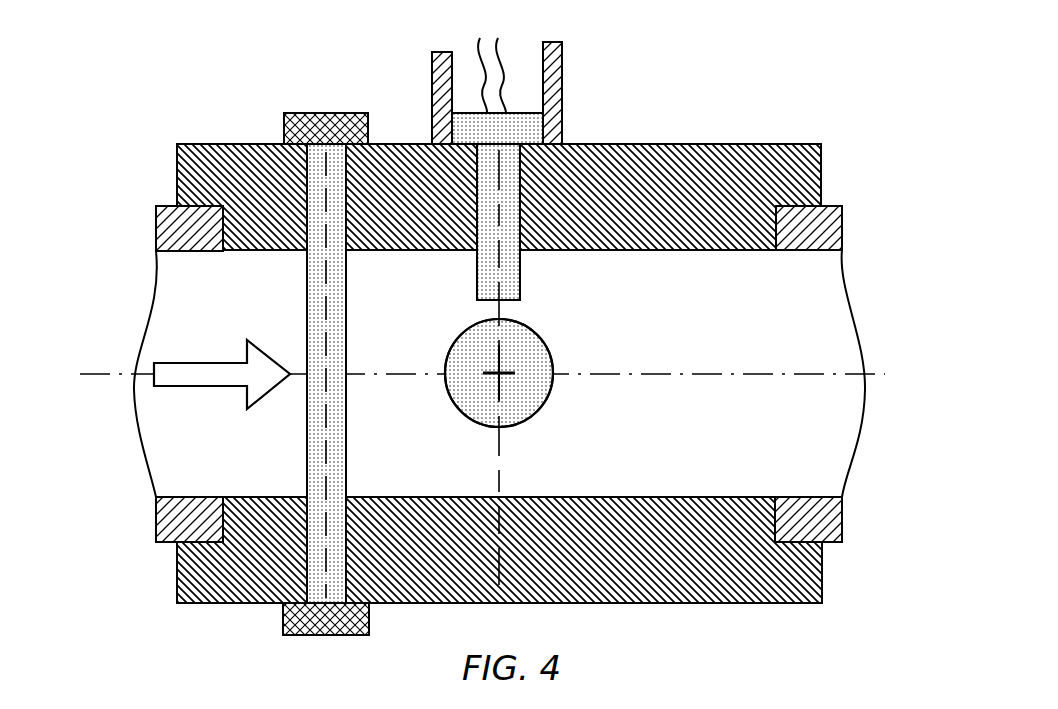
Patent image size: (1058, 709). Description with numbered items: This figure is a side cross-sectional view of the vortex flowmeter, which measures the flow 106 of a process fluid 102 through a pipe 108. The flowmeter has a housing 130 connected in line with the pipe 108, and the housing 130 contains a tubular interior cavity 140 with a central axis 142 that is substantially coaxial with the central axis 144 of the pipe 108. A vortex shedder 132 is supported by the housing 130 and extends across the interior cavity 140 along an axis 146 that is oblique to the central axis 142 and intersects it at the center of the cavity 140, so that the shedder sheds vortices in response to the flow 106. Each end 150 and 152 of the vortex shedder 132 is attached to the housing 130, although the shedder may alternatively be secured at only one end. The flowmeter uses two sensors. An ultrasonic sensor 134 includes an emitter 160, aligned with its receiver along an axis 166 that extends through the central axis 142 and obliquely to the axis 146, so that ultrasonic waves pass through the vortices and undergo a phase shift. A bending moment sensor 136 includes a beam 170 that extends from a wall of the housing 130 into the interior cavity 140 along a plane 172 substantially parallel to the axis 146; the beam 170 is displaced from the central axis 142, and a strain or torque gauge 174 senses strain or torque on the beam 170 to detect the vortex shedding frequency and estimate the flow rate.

The process fluid 102 is at (172, 292).
The flow 106 is at (177, 378).
The pipe 108 is at (163, 225).
The housing 130 is at (188, 160).
The vortex shedder 132 is at (317, 339).
The ultrasonic sensor 134 is at (591, 364).
The bending moment sensor 136 is at (533, 82).
The interior cavity 140 is at (632, 475).
The central axis 142 is at (667, 370).
The central axis of the pipe 144 is at (90, 373).
The axis 146 is at (327, 312).
The end of the vortex shedder 150 is at (313, 177).
The end of the vortex shedder 152 is at (323, 592).
The emitter 160 is at (530, 403).
The axis 166 is at (499, 373).
The beam 170 is at (483, 281).
The plane 172 is at (716, 252).
The strain or torque gauge 174 is at (465, 122).